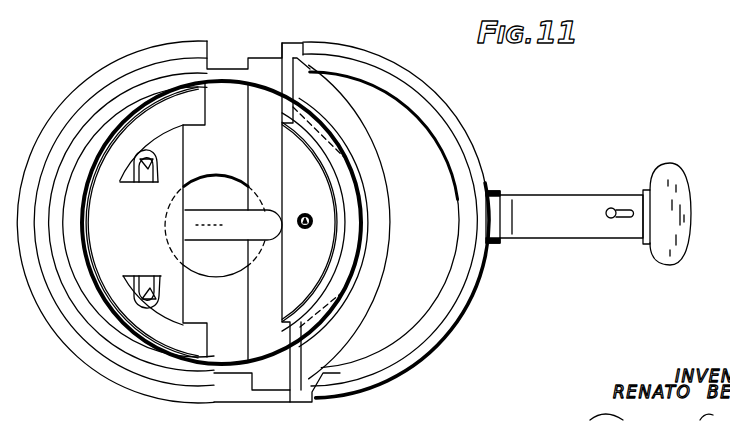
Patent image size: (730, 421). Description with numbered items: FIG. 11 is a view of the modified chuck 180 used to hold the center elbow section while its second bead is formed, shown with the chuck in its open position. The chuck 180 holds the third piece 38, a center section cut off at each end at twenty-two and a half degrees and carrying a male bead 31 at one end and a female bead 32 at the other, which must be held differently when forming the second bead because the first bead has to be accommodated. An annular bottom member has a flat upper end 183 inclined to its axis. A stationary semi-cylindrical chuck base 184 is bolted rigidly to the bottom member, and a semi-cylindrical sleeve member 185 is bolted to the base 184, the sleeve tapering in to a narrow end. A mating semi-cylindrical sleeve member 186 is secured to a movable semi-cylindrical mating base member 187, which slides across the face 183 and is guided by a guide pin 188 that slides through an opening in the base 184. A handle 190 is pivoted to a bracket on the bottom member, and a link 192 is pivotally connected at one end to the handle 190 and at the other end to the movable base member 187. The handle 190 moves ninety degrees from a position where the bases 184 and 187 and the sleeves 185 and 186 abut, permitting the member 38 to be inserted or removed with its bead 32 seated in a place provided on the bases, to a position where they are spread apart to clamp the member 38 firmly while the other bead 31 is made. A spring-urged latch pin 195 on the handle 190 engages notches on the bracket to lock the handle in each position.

The chuck 180 is at (407, 212).
The semi-cylindrical sleeve member 185 is at (107, 107).
The mating semi-cylindrical sleeve member 186 is at (462, 146).
The movable semi-cylindrical mating base member 187 is at (262, 60).
The third piece 38 is at (315, 112).
The male bead 31 is at (337, 163).
The female bead 32 is at (340, 238).
The flat upper end 183 is at (226, 154).
The stationary semi-cylindrical chuck base 184 is at (149, 234).
The guide pin 188 is at (205, 240).
The handle 190 is at (603, 183).
The link 192 is at (490, 246).
The spring-urged latch pin 195 is at (623, 220).